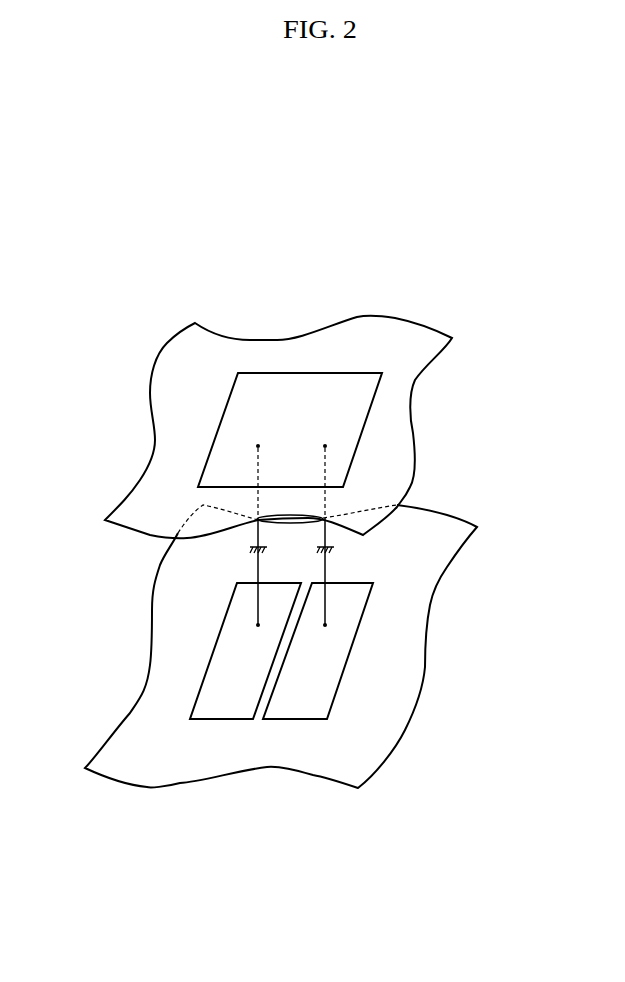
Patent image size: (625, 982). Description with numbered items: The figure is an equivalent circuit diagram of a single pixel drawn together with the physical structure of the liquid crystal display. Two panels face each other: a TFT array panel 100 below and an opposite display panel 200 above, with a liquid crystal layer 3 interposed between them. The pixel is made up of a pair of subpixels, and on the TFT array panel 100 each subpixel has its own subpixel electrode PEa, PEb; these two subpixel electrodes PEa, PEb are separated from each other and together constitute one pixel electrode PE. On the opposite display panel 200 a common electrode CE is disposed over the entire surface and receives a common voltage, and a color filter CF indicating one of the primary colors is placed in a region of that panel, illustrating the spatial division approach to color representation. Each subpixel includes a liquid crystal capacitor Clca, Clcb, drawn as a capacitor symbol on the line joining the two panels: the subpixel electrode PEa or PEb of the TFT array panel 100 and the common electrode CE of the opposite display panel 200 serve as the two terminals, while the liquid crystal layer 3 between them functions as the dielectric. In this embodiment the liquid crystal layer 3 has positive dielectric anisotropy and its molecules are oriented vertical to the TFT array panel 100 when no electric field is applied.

The liquid crystal layer 3 is at (112, 592).
The opposite display panel 200 is at (427, 433).
The common electrode CE is at (410, 392).
The color filter CF is at (355, 453).
The TFT array panel 100 is at (442, 653).
The pixel electrode PE is at (292, 845).
The subpixel electrode PEa is at (218, 720).
The subpixel electrode PEb is at (293, 720).
The liquid crystal capacitor Clca is at (277, 535).
The liquid crystal capacitor Clcb is at (343, 535).